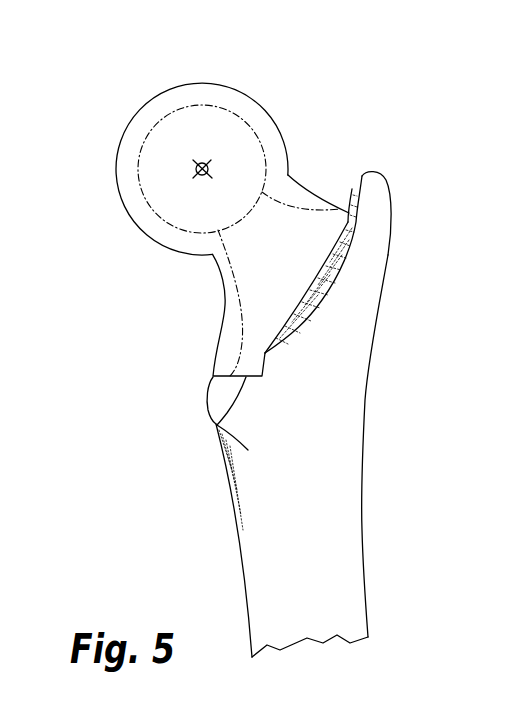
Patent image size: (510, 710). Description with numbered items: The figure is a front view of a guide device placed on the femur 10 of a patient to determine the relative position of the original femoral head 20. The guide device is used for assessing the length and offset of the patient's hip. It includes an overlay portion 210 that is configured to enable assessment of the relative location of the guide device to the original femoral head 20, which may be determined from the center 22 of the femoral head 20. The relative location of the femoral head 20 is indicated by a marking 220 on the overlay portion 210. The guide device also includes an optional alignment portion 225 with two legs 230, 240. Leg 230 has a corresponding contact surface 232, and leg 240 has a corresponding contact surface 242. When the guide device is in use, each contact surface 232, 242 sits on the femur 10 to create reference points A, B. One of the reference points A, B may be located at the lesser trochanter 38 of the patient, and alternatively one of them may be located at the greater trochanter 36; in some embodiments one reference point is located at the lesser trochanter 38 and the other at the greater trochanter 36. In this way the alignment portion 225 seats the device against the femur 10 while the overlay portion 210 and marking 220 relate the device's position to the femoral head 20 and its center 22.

The femoral head 20 is at (208, 118).
The center 22 is at (192, 168).
The overlay portion 210 is at (244, 108).
The marking 220 is at (181, 172).
The alignment portion 225 is at (289, 185).
The leg 230 is at (342, 212).
The reference point A is at (360, 212).
The contact surface 232 is at (357, 220).
The greater trochanter 36 is at (357, 225).
The leg 240 is at (237, 323).
The contact surface 242 is at (233, 375).
The lesser trochanter 38 is at (222, 393).
The reference point B is at (215, 422).
The femur 10 is at (188, 523).